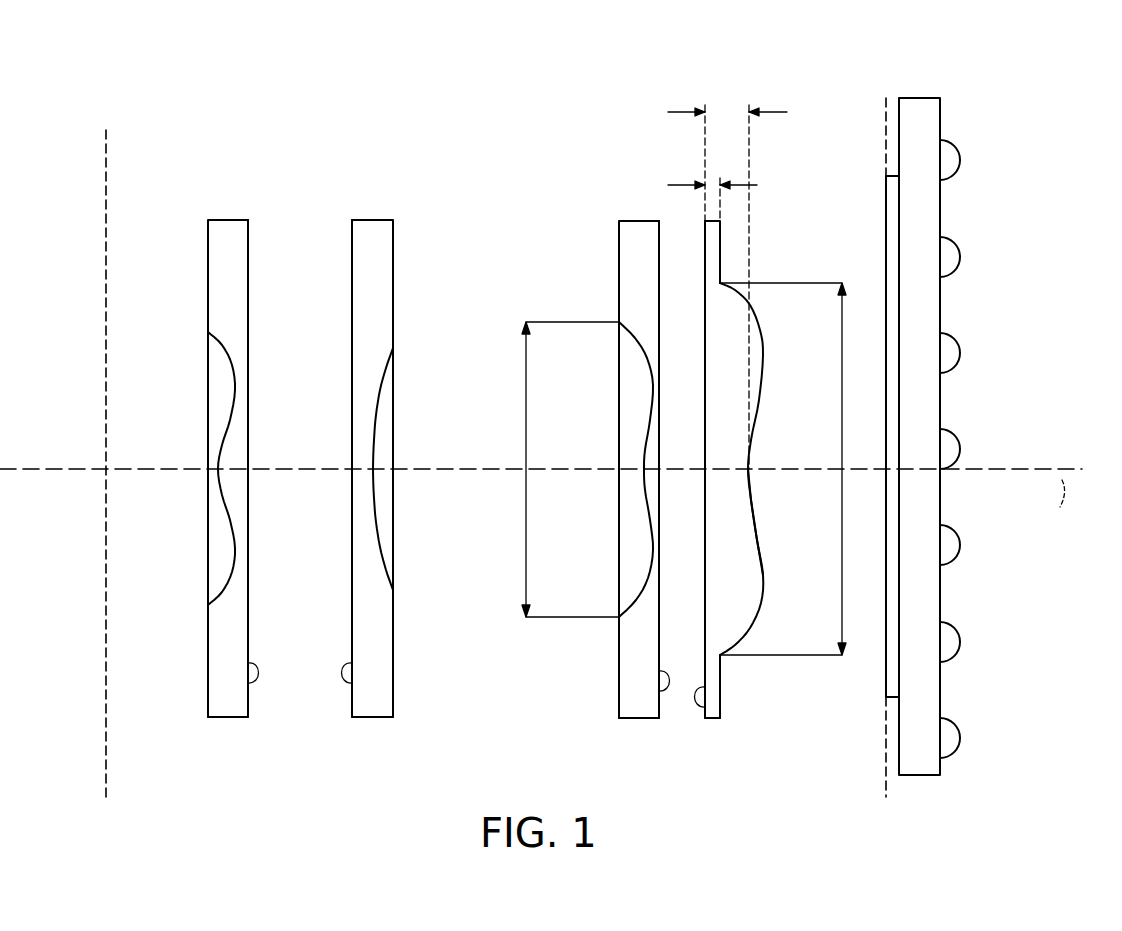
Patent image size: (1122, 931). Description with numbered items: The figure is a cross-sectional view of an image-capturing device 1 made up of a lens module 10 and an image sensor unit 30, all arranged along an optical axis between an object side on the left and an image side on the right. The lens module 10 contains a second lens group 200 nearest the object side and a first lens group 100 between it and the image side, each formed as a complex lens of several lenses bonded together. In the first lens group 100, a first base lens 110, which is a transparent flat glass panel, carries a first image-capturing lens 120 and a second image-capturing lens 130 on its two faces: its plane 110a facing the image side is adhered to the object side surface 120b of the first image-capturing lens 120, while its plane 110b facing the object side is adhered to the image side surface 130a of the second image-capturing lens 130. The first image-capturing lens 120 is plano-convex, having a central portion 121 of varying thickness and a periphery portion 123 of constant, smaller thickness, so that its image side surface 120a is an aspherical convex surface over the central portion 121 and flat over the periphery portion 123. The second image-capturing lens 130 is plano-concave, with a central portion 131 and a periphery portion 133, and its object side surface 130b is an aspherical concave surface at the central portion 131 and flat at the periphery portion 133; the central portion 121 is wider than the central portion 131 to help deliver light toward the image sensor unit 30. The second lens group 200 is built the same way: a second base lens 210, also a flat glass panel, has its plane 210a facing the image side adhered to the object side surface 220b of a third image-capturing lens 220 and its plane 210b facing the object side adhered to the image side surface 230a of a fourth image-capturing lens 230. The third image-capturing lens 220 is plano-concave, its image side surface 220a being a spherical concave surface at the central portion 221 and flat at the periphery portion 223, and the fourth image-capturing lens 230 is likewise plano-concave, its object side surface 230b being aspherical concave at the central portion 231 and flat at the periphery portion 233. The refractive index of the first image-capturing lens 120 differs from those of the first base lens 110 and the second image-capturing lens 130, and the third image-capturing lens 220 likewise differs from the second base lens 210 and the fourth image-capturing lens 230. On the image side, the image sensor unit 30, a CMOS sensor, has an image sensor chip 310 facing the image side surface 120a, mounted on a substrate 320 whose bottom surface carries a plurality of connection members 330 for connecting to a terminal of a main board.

The image-capturing device 1 is at (55, 114).
The lens module 10 is at (170, 150).
The image sensor unit 30 is at (897, 84).
The first lens group 100 is at (640, 218).
The first base lens 110 is at (682, 708).
The plane facing the image side 110a is at (705, 705).
The plane facing the object side 110b is at (659, 689).
The first image-capturing lens 120 is at (712, 708).
The image side surface 120a is at (763, 590).
The object side surface 120b is at (708, 683).
The central portion 121 is at (736, 352).
The periphery portion 123 is at (713, 239).
The second image-capturing lens 130 is at (636, 708).
The image side surface 130a is at (659, 657).
The object side surface 130b is at (648, 520).
The central portion 131 is at (650, 452).
The periphery portion 133 is at (628, 239).
The second lens group 200 is at (230, 219).
The second base lens 210 is at (302, 707).
The plane facing the image side 210a is at (352, 681).
The plane facing the object side 210b is at (248, 681).
The third image-capturing lens 220 is at (373, 707).
The image side surface 220a is at (376, 512).
The object side surface 220b is at (352, 642).
The central portion 221 is at (372, 440).
The periphery portion 223 is at (393, 239).
The fourth image-capturing lens 230 is at (228, 707).
The image side surface 230a is at (248, 642).
The object side surface 230b is at (226, 514).
The central portion 231 is at (228, 443).
The periphery portion 233 is at (208, 239).
The image sensor chip 310 is at (893, 403).
The substrate 320 is at (930, 309).
The connection members 330 is at (950, 258).